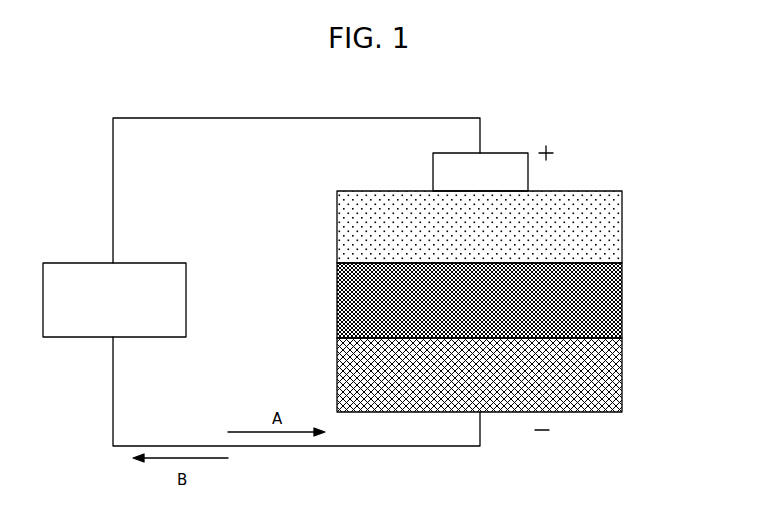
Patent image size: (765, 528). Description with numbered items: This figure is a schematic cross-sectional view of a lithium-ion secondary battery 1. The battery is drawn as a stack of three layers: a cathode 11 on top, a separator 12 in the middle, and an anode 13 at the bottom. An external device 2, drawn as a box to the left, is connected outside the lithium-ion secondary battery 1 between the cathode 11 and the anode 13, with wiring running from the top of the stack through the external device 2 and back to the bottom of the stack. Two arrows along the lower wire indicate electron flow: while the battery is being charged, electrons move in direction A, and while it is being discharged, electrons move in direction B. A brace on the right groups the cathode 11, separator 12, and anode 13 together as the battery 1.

The lithium-ion secondary battery 1 is at (521, 301).
The external device 2 is at (178, 300).
The cathode 11 is at (612, 229).
The separator 12 is at (622, 303).
The anode 13 is at (500, 375).